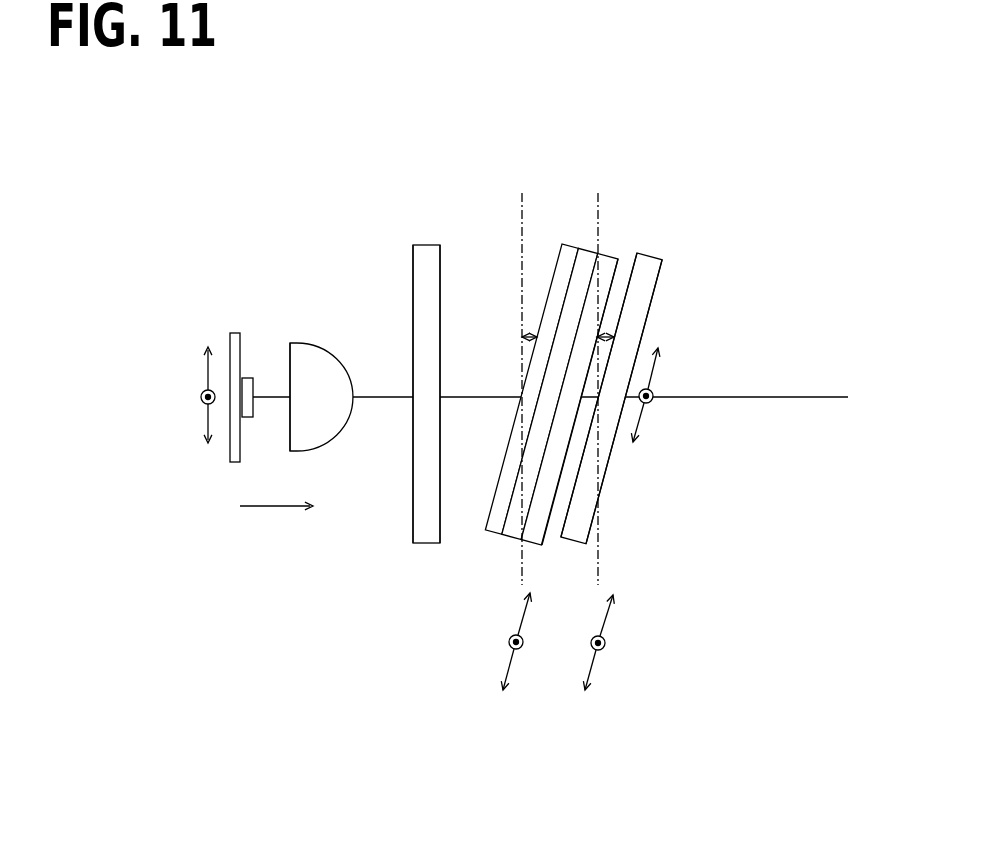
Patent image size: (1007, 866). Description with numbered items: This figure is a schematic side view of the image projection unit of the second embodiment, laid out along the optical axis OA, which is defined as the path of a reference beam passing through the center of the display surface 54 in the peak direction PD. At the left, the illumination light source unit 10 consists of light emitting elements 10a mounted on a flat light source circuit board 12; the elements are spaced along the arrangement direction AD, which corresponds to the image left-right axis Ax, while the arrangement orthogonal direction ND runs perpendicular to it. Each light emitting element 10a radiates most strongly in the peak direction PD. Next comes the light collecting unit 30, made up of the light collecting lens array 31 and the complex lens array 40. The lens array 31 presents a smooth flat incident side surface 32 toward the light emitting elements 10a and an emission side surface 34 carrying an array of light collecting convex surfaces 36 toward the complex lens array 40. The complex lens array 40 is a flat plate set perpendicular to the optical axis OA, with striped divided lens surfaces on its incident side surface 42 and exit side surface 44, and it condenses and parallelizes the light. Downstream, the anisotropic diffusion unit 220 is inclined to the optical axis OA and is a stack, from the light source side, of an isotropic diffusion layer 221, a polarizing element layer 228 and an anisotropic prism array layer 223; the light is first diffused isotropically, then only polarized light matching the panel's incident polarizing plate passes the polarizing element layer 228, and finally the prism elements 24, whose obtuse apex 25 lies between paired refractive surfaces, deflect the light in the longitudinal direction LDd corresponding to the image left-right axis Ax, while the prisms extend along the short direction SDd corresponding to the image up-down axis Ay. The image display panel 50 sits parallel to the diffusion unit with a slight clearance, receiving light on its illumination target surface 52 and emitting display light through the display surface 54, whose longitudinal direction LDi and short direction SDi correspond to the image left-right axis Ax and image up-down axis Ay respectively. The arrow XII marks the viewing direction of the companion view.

The illumination light source unit 10 is at (247, 335).
The light source circuit board 12 is at (237, 333).
The light emitting element 10a is at (247, 378).
The light collecting unit 30 is at (382, 323).
The light collecting lens array 31 is at (337, 433).
The incident side surface 32 is at (342, 391).
The emission side surface 34 is at (343, 369).
The light collecting convex surface 36 is at (341, 362).
The complex lens array 40 is at (427, 363).
The incident side surface 42 is at (412, 277).
The exit side surface 44 is at (441, 277).
The anisotropic diffusion unit 220 is at (606, 325).
The isotropic diffusion layer 221 is at (531, 389).
The polarizing element layer 228 is at (550, 393).
The anisotropic prism array layer 223 is at (569, 399).
The prism element 24 is at (634, 380).
The apex 25 is at (618, 272).
The image display panel 50 is at (639, 429).
The illumination target surface 52 is at (599, 395).
The display surface 54 is at (624, 402).
The optical axis OA is at (793, 396).
The arrangement orthogonal direction ND is at (205, 380).
The arrangement direction AD is at (200, 397).
The peak direction PD is at (268, 507).
The view direction of FIG. 12 XII is at (662, 128).
The image left-right axis Ax is at (652, 400).
The image up-down axis Ay is at (640, 420).
The longitudinal direction of the anisotropic diffusion unit LDd is at (510, 638).
The short direction of the anisotropic diffusion unit SDd is at (508, 666).
The longitudinal direction of the display surface LDi is at (604, 641).
The short direction of the display surface SDi is at (602, 666).